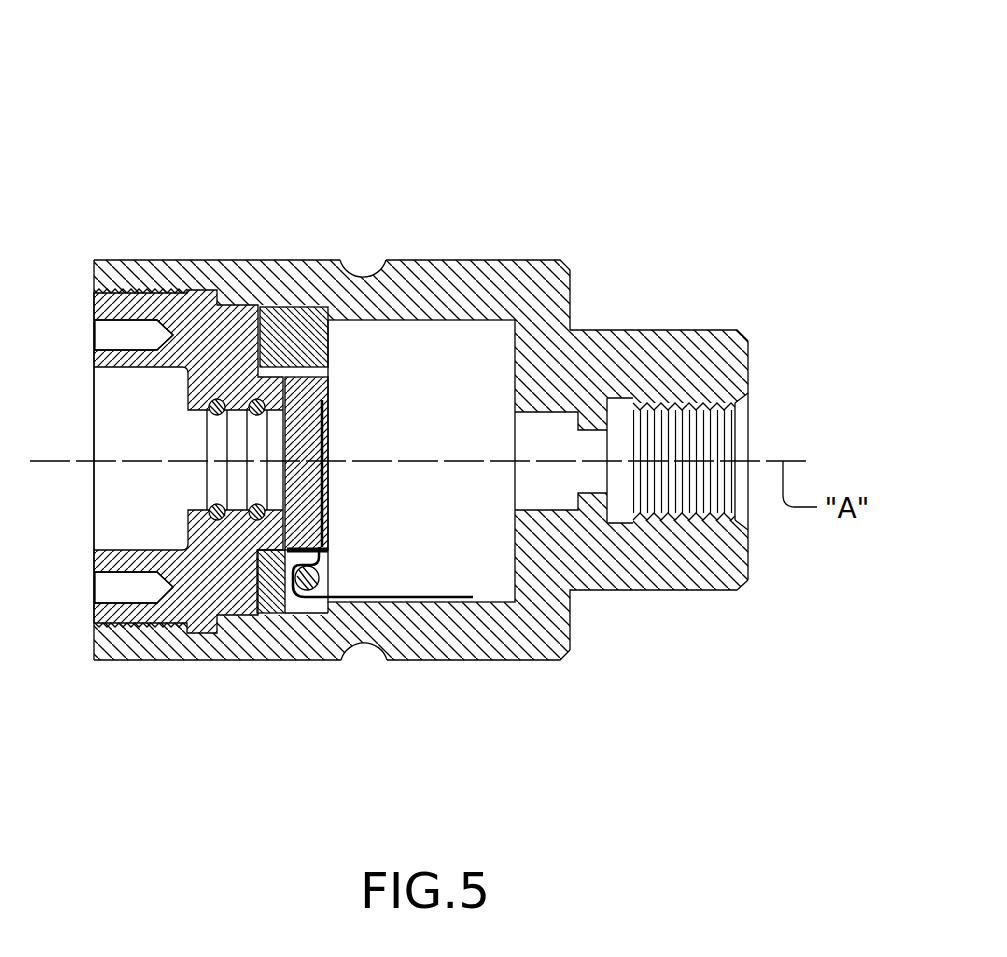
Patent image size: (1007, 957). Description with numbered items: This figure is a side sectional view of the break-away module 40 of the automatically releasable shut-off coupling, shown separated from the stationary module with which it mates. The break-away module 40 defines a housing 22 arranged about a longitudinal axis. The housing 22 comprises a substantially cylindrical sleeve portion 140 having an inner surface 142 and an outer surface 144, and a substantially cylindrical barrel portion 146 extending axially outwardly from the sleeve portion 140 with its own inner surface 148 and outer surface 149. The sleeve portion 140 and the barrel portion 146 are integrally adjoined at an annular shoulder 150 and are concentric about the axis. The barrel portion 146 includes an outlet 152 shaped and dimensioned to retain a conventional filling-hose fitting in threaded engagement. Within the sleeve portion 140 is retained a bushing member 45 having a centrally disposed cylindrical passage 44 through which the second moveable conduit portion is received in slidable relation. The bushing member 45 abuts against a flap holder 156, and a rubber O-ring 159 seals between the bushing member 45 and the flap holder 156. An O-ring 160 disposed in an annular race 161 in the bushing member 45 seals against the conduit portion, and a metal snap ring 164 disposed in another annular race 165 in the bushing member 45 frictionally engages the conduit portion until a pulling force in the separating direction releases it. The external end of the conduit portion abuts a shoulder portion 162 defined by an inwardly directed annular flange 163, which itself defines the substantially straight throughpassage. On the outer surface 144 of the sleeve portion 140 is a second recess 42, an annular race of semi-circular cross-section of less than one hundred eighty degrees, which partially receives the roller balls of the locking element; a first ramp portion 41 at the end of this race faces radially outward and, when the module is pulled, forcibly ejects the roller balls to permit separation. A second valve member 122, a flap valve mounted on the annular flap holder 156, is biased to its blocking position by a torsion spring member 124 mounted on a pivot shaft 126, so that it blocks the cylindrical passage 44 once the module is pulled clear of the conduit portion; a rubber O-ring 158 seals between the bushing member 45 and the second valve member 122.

The break-away module 40 is at (575, 122).
The housing 22 is at (540, 272).
The first ramp portion 41 is at (352, 272).
The second recess 42 is at (363, 272).
The cylindrical passage 44 is at (193, 395).
The bushing member 45 is at (193, 543).
The second valve member 122 is at (330, 393).
The torsion spring member 124 is at (417, 597).
The pivot shaft 126 is at (297, 584).
The sleeve portion 140 is at (497, 652).
The inner surface 142 is at (422, 322).
The outer surface 144 is at (433, 262).
The barrel portion 146 is at (633, 353).
The inner surface 148 is at (633, 405).
The outer surface 149 is at (688, 593).
The annular shoulder 150 is at (560, 632).
The outlet 152 is at (718, 446).
The flap holder 156 is at (330, 350).
The O-ring 158 is at (330, 535).
The O-ring 159 is at (200, 260).
The O-ring 160 is at (330, 490).
The annular race 161 is at (332, 449).
The shoulder portion 162 is at (578, 424).
The annular flange 163 is at (578, 497).
The snap ring 164 is at (212, 452).
The annular race 165 is at (210, 512).